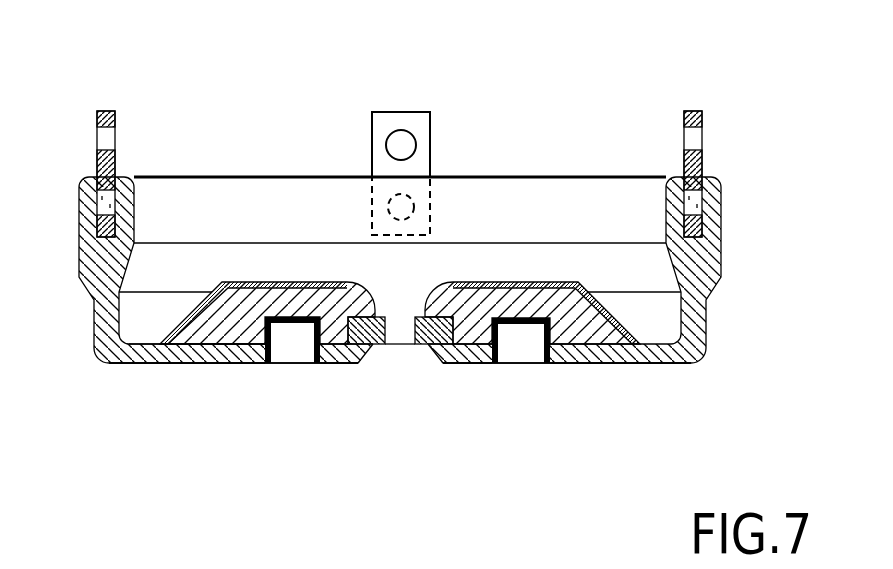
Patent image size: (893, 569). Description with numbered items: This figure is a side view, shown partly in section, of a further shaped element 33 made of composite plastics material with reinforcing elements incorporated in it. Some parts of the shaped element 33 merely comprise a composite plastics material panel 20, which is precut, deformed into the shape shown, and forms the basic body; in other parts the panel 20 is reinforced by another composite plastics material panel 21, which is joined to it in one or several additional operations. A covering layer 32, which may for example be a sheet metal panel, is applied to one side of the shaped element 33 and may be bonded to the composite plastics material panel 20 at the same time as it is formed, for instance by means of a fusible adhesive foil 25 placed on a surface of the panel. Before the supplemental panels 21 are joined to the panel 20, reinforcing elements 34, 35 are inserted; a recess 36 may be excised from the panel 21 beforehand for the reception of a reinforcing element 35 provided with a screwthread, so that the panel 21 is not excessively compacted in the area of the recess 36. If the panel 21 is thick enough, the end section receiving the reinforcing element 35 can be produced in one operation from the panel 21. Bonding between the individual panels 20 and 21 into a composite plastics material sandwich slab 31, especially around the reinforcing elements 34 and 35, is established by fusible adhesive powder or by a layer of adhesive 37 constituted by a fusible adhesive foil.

The composite plastics material panel 20 is at (200, 322).
The composite plastics material panel 21 is at (110, 325).
The fusible adhesive foil 25 is at (584, 303).
The composite plastics material sandwich slab 31 is at (616, 385).
The covering layer 32 is at (255, 282).
The shaped element 33 is at (219, 97).
The reinforcing element 34 is at (310, 335).
The reinforcing element 35 is at (107, 111).
The recess 36 is at (380, 345).
The layer of adhesive 37 is at (225, 352).